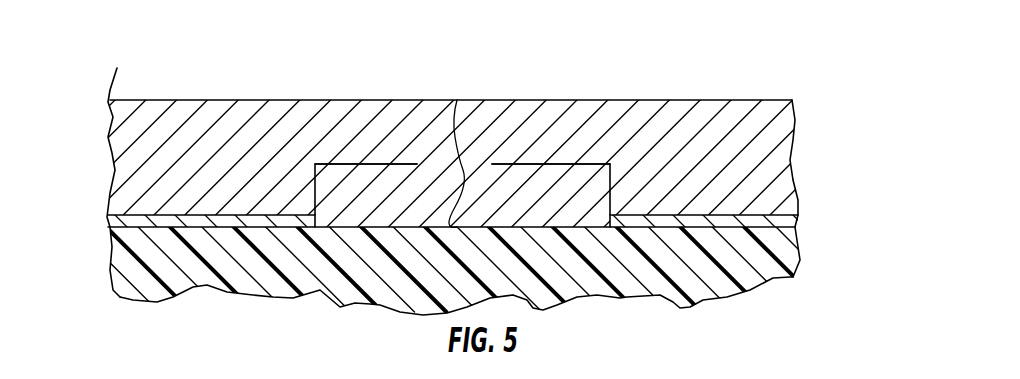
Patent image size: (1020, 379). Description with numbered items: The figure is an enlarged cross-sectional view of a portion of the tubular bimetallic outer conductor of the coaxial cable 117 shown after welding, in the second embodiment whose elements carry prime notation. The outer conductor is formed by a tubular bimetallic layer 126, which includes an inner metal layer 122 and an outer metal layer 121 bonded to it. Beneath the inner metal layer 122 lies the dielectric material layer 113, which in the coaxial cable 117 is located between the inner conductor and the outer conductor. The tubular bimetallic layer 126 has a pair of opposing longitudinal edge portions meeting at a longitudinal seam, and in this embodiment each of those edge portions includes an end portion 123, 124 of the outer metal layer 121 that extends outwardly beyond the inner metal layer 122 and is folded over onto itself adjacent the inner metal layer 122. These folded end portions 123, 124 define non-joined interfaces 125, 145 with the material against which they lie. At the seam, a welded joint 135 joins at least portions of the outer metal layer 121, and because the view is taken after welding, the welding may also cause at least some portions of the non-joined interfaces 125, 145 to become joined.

The coaxial cable 117 is at (146, 64).
The outer metal layer 121 is at (782, 127).
The inner metal layer 122 is at (793, 220).
The dielectric material layer 113 is at (790, 260).
The end portion 123 is at (382, 89).
The end portion 124 is at (580, 88).
The non-joined interface 125 is at (353, 164).
The non-joined interface 145 is at (572, 164).
The welded joint 135 is at (457, 100).
The tubular bimetallic layer 126 is at (112, 197).